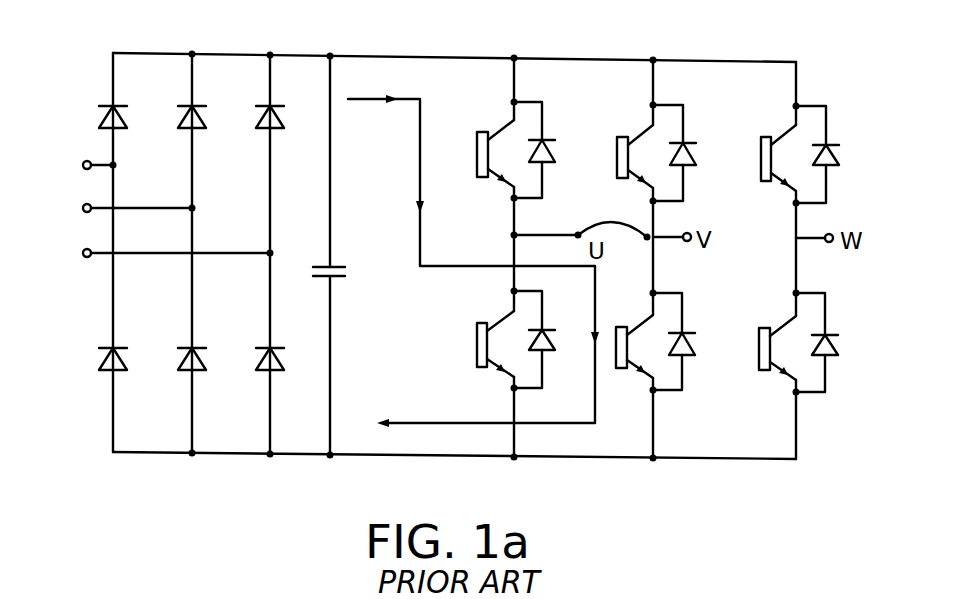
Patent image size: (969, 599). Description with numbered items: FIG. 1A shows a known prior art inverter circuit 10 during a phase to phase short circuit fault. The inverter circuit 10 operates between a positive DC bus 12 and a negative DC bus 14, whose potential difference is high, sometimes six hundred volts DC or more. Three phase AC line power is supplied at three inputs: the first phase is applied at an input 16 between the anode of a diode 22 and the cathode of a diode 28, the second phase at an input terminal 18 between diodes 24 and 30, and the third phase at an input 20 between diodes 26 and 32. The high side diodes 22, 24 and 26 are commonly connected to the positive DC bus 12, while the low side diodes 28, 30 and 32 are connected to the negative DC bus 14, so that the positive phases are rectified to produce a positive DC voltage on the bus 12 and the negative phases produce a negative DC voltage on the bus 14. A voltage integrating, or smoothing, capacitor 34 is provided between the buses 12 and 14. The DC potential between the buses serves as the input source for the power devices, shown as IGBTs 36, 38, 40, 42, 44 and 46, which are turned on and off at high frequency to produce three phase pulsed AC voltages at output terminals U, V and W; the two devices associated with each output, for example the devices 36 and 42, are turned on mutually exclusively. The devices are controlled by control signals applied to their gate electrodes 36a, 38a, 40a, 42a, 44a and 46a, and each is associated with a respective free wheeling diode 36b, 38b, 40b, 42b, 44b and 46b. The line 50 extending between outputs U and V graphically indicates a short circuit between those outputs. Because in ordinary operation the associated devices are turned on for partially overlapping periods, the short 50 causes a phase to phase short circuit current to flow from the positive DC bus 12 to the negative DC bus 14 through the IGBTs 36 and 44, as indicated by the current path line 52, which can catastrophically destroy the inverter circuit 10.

The inverter circuit 10 is at (811, 92).
The positive DC bus 12 is at (575, 60).
The negative DC bus 14 is at (610, 458).
The input 16 is at (84, 164).
The input terminal 18 is at (124, 207).
The input 20 is at (163, 252).
The diode 22 is at (134, 108).
The diode 24 is at (213, 108).
The diode 26 is at (291, 108).
The diode 28 is at (132, 352).
The diode 30 is at (209, 352).
The diode 32 is at (287, 352).
The voltage integrating capacitor 34 is at (335, 270).
The IGBT 36 is at (513, 147).
The gate electrode 36a is at (484, 141).
The free wheeling diode 36b is at (547, 164).
The IGBT 38 is at (655, 151).
The gate electrode 38a is at (622, 147).
The free wheeling diode 38b is at (687, 167).
The IGBT 40 is at (795, 153).
The gate electrode 40a is at (764, 148).
The free wheeling diode 40b is at (830, 160).
The IGBT 42 is at (512, 337).
The gate electrode 42a is at (480, 334).
The free wheeling diode 42b is at (546, 345).
The IGBT 44 is at (669, 345).
The gate electrode 44a is at (619, 356).
The free wheeling diode 44b is at (686, 350).
The IGBT 46 is at (794, 341).
The gate electrode 46a is at (763, 338).
The free wheeling diode 46b is at (829, 352).
The line 50 is at (614, 218).
The current path line 52 is at (418, 153).